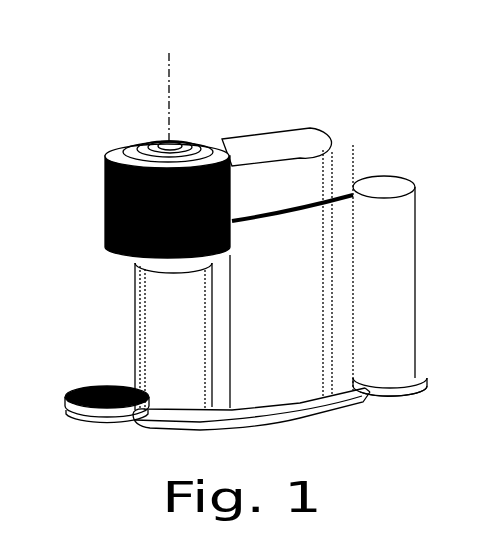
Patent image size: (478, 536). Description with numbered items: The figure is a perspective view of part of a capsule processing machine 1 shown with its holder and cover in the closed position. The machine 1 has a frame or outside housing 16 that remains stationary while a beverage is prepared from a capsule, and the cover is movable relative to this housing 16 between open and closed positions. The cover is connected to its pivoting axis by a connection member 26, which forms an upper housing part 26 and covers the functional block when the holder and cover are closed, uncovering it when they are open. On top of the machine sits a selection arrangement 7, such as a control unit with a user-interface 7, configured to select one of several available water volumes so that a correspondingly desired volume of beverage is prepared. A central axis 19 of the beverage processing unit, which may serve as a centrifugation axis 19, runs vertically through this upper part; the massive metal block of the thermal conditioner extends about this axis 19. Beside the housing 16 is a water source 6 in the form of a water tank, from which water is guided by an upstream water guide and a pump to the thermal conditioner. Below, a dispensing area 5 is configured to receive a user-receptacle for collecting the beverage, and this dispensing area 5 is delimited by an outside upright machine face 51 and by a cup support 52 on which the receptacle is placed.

The capsule processing machine 1 is at (102, 70).
The dispensing area 5 is at (99, 336).
The water source 6 is at (395, 278).
The selection arrangement 7 is at (157, 142).
The frame or outside housing 16 is at (285, 368).
The central axis 19 is at (173, 87).
The connection member 26 is at (277, 142).
The outside upright machine face 51 is at (165, 320).
The cup support 52 is at (80, 391).